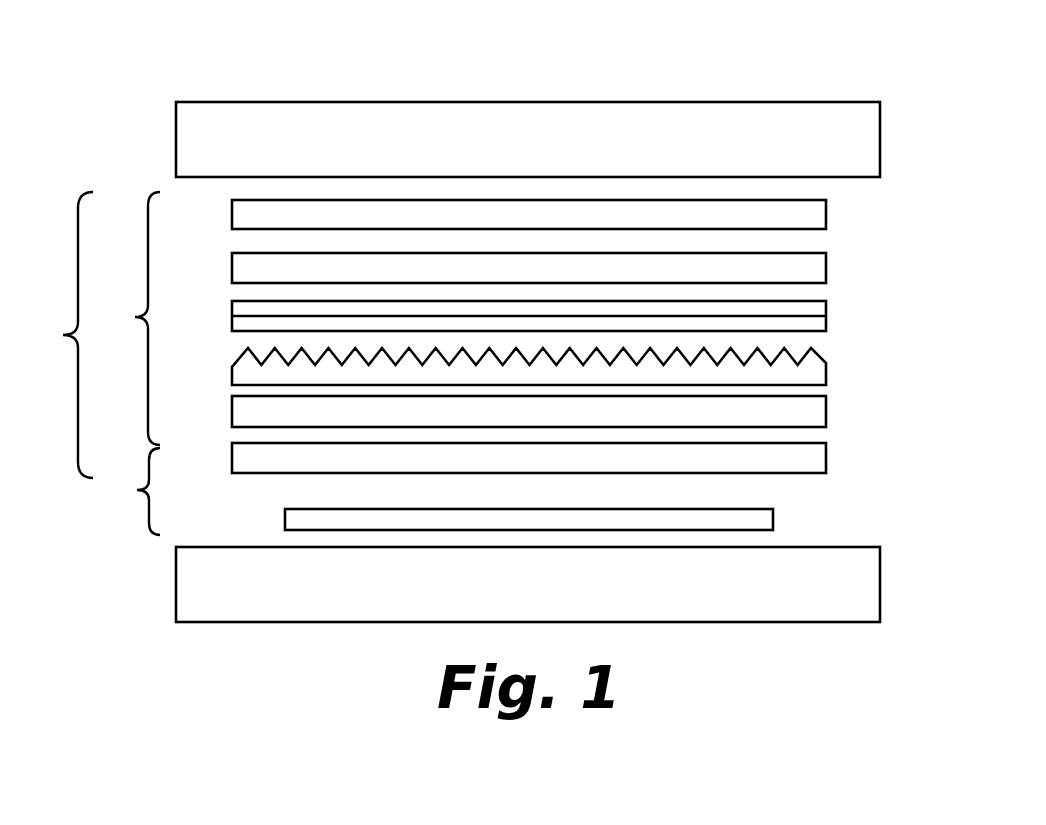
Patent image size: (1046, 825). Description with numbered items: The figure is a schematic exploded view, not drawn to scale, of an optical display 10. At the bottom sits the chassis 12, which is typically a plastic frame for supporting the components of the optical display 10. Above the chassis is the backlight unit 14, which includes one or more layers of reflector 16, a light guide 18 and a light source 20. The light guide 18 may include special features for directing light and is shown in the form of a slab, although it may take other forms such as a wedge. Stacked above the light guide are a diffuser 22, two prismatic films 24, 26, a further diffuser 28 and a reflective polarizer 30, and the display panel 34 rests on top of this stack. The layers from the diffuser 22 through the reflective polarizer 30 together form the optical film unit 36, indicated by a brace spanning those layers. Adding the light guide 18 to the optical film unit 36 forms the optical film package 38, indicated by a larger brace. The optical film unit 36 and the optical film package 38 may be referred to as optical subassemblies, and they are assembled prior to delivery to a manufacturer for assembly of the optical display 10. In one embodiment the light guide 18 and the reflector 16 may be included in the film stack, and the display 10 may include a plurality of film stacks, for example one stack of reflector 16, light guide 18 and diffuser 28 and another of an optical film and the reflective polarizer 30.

The optical display 10 is at (802, 62).
The chassis 12 is at (188, 587).
The backlight unit 14 is at (131, 491).
The reflector 16 is at (296, 521).
The light guide 18 is at (243, 460).
The light source 20 is at (862, 470).
The diffuser 22 is at (243, 412).
The prismatic film 24 is at (243, 367).
The prismatic film 26 is at (243, 316).
The diffuser 28 is at (243, 270).
The reflective polarizer 30 is at (244, 216).
The display panel 34 is at (188, 133).
The optical film unit 36 is at (130, 318).
The optical film package 38 is at (57, 335).